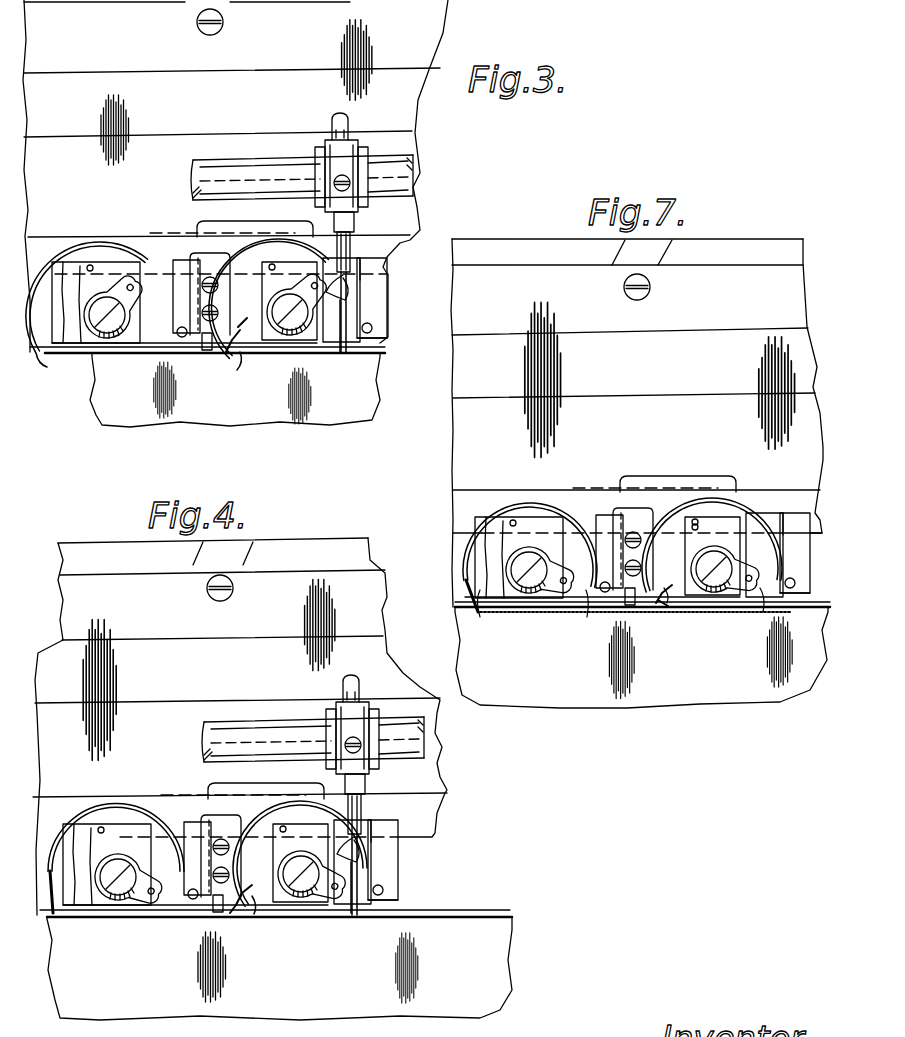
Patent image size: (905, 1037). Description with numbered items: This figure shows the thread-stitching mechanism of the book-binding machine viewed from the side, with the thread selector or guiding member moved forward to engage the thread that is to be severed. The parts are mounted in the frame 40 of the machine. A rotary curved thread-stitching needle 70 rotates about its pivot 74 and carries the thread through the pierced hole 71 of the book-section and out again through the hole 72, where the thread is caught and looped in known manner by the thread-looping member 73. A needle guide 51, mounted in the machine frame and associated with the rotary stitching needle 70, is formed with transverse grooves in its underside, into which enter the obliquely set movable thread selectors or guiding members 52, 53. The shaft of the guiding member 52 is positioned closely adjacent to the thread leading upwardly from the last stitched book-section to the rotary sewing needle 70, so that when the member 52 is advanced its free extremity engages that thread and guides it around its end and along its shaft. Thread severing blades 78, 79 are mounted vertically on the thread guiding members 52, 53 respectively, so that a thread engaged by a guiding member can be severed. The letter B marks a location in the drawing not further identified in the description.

In FIG. 4, the frame 40 is at (372, 628).
In FIG. 7, the frame 40 is at (790, 280).
In FIG. 3, the needle guide 51 is at (384, 316).
In FIG. 4, the needle guide 51 is at (398, 890).
In FIG. 7, the needle guide 51 is at (805, 560).
In FIG. 3, the thread selector or guiding member 52 is at (268, 350).
In FIG. 4, the thread selector or guiding member 52 is at (266, 900).
In FIG. 7, the thread selector or guiding member 52 is at (670, 604).
In FIG. 3, the thread selector or guiding member 53 is at (203, 353).
In FIG. 4, the thread selector or guiding member 53 is at (213, 913).
In FIG. 7, the thread selector or guiding member 53 is at (627, 603).
In FIG. 3, the rotary curved thread-stitching needle 70 is at (62, 366).
In FIG. 4, the rotary curved thread-stitching needle 70 is at (52, 874).
In FIG. 7, the rotary curved thread-stitching needle 70 is at (467, 550).
In FIG. 3, the pierced hole 71 is at (240, 368).
In FIG. 4, the pierced hole 71 is at (254, 916).
In FIG. 7, the pierced hole 71 is at (480, 617).
In FIG. 3, the hole 72 is at (341, 354).
In FIG. 4, the hole 72 is at (354, 916).
In FIG. 7, the hole 72 is at (587, 617).
In FIG. 3, the thread-looping member 73 is at (344, 278).
In FIG. 4, the thread-looping member 73 is at (357, 803).
In FIG. 3, the pivot 74 is at (108, 333).
In FIG. 4, the pivot 74 is at (118, 897).
In FIG. 7, the pivot 74 is at (528, 595).
In FIG. 7, the thread severing blade 78 is at (706, 565).
In FIG. 3, the thread severing blade 79 is at (180, 328).
In FIG. 4, the thread severing blade 79 is at (190, 898).
In FIG. 7, the thread severing blade 79 is at (612, 598).
In FIG. 3, the bracket B is at (220, 262).